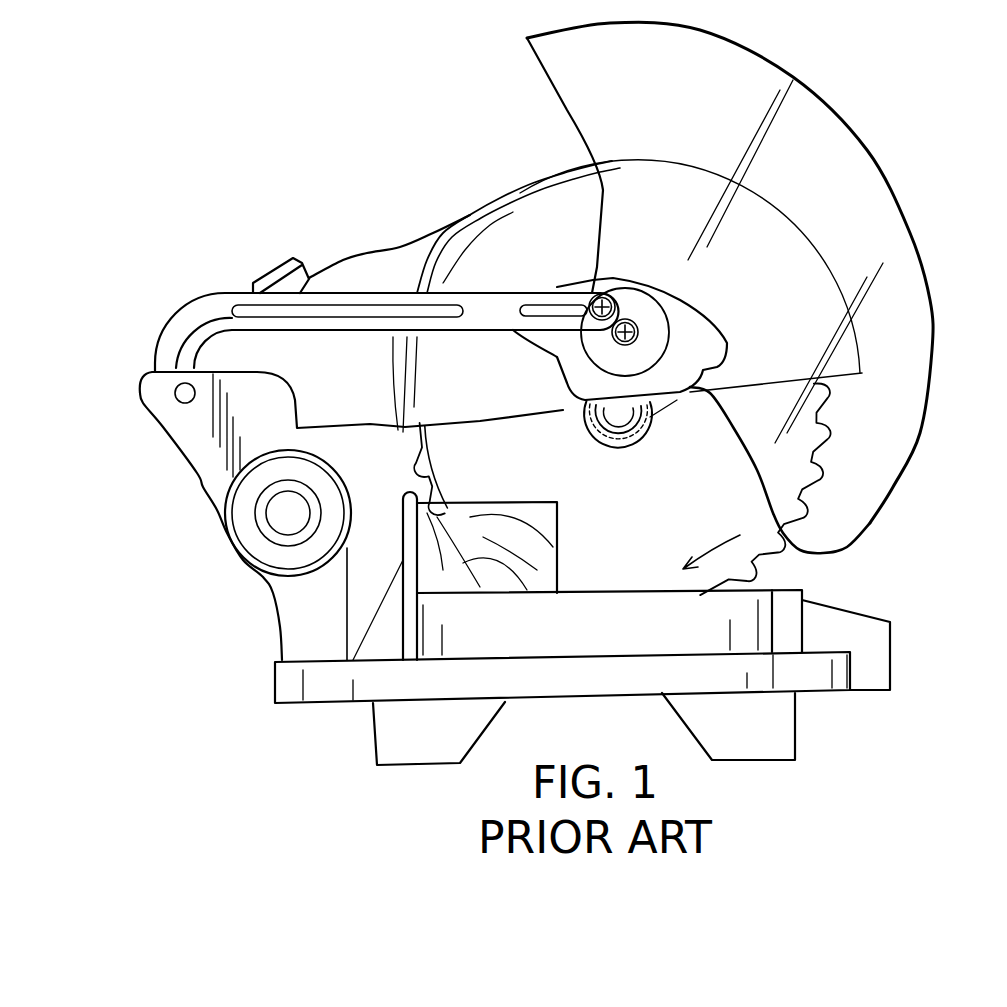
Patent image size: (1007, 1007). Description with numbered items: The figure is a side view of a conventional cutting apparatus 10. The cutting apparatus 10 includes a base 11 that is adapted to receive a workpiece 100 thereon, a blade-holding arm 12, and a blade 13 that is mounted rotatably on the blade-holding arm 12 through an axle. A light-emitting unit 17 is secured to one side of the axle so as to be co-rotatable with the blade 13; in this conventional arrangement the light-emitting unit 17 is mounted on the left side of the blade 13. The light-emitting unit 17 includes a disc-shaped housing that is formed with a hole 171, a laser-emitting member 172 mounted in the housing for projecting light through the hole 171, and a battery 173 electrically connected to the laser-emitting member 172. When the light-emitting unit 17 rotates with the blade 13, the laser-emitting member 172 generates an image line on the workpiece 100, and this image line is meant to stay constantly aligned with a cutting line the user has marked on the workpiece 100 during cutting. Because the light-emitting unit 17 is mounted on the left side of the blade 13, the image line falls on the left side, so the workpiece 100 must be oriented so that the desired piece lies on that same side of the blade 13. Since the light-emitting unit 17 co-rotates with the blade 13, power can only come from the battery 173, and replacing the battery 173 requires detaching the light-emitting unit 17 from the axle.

The cutting apparatus 10 is at (383, 205).
The base 11 is at (757, 623).
The blade-holding arm 12 is at (520, 200).
The blade 13 is at (737, 507).
The light-emitting unit 17 is at (650, 437).
The workpiece 100 is at (430, 583).
The hole 171 is at (620, 445).
The laser-emitting member 172 is at (597, 445).
The battery 173 is at (578, 428).